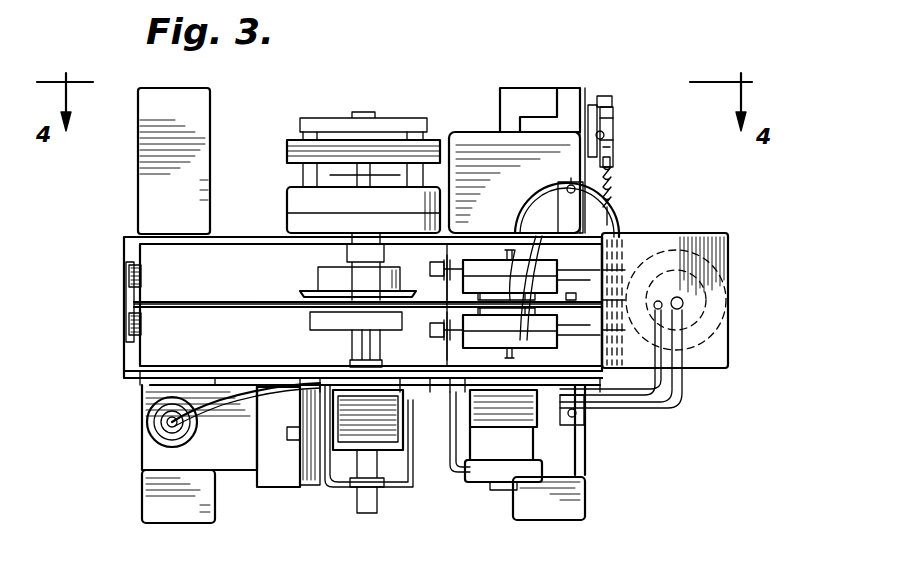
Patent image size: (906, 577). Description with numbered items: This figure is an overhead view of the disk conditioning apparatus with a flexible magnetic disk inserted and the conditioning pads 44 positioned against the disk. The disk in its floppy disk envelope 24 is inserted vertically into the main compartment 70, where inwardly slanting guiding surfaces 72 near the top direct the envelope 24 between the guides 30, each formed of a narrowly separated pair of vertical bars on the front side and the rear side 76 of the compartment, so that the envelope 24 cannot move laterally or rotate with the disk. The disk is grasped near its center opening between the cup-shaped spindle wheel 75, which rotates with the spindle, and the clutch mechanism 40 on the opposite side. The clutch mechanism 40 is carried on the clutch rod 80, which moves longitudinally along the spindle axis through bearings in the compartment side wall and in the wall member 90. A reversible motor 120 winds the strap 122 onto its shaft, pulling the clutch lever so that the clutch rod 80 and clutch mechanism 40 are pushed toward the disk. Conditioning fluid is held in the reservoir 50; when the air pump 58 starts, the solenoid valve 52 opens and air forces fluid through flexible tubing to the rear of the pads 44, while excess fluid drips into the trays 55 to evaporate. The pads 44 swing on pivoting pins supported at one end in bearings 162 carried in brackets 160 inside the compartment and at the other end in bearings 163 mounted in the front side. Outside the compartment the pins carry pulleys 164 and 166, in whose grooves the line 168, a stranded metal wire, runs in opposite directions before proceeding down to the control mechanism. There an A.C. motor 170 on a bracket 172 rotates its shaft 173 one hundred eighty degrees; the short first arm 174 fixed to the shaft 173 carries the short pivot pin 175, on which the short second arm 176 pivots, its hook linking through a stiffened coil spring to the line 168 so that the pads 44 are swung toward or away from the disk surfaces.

The floppy disk envelope 24 is at (229, 312).
The guides 30 is at (143, 300).
The clutch mechanism 40 is at (326, 325).
The pads 44 is at (528, 250).
The reservoir 50 is at (708, 344).
The solenoid valve 52 is at (490, 475).
The trays 55 is at (570, 454).
The air pump 58 is at (160, 458).
The main compartment 70 is at (263, 233).
The guiding surfaces 72 is at (142, 283).
The spindle wheel 75 is at (318, 278).
The rear side 76 is at (130, 289).
The clutch rod 80 is at (363, 507).
The wall member 90 is at (413, 487).
The reversible motor 120 is at (270, 450).
The strap 122 is at (383, 407).
The brackets 160 is at (440, 262).
The bearings 162 is at (447, 250).
The bearings 163 is at (611, 212).
The pulley 164 is at (655, 392).
The pulley 166 is at (640, 240).
The line 168 is at (620, 305).
The A.C. motor 170 is at (535, 88).
The bracket 172 is at (590, 107).
The shaft 173 is at (611, 144).
The short first arm 174 is at (600, 110).
The short pivot pin 175 is at (605, 94).
The short second arm 176 is at (612, 123).